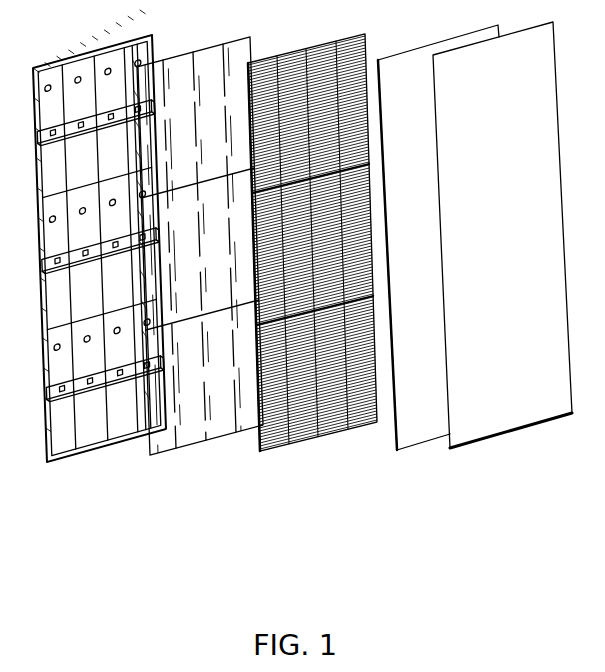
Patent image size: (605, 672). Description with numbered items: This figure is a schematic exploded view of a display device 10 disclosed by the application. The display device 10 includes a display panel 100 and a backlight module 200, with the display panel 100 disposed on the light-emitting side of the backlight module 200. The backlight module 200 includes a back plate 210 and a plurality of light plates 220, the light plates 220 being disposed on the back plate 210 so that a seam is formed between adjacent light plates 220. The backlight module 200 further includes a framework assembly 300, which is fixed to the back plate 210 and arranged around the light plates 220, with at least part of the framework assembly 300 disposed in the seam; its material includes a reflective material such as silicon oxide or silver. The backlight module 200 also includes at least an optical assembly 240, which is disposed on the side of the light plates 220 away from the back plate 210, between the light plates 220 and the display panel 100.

The display device 10 is at (302, 311).
The display panel 100 is at (502, 295).
The backlight module 200 is at (265, 290).
The back plate 210 is at (70, 453).
The light plates 220 is at (297, 442).
The optical assembly 240 is at (438, 277).
The framework assembly 300 is at (180, 446).